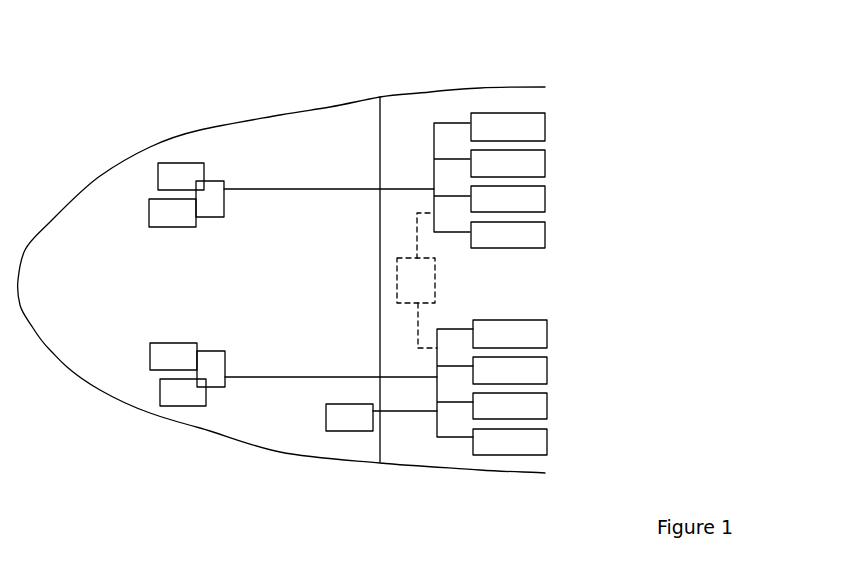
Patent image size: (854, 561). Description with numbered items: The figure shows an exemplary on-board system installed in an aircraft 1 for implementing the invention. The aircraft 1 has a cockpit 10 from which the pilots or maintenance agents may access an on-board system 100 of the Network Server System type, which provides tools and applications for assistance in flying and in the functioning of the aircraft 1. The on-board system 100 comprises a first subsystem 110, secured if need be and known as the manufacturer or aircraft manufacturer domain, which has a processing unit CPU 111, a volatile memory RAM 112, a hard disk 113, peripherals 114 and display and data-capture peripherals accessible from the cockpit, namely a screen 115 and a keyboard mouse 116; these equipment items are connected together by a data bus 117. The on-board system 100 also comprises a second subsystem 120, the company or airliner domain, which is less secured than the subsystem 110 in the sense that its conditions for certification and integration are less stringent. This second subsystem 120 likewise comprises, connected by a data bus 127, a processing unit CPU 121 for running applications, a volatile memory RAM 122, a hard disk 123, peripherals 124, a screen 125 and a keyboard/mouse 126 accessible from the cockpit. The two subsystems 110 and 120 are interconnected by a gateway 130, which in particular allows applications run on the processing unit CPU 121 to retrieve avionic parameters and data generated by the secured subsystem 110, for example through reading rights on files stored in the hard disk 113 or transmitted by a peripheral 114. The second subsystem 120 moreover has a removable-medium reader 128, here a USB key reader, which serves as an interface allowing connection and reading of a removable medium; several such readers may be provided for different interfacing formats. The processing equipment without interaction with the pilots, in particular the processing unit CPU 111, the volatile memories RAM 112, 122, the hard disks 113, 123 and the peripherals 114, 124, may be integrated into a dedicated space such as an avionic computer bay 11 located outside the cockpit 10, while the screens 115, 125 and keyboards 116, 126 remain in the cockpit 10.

The aircraft 1 is at (93, 130).
The cockpit 10 is at (76, 333).
The avionic computer bay 11 is at (400, 448).
The on-board system 100 is at (751, 100).
The subsystem 110 is at (677, 102).
The processing unit CPU 111 is at (545, 127).
The volatile memory RAM 112 is at (545, 163).
The hard disk 113 is at (545, 199).
The peripherals 114 is at (545, 235).
The screen 115 is at (178, 173).
The keyboard mouse 116 is at (175, 210).
The data bus 117 is at (448, 122).
The second subsystem 120 is at (682, 308).
The processing unit CPU 121 is at (547, 334).
The volatile memory RAM 122 is at (547, 370).
The hard disk 123 is at (547, 406).
The peripherals 124 is at (547, 442).
The screen 125 is at (170, 352).
The keyboard/mouse 126 is at (180, 395).
The data bus 127 is at (445, 437).
The removable-medium reader 128 is at (343, 423).
The gateway 130 is at (423, 270).